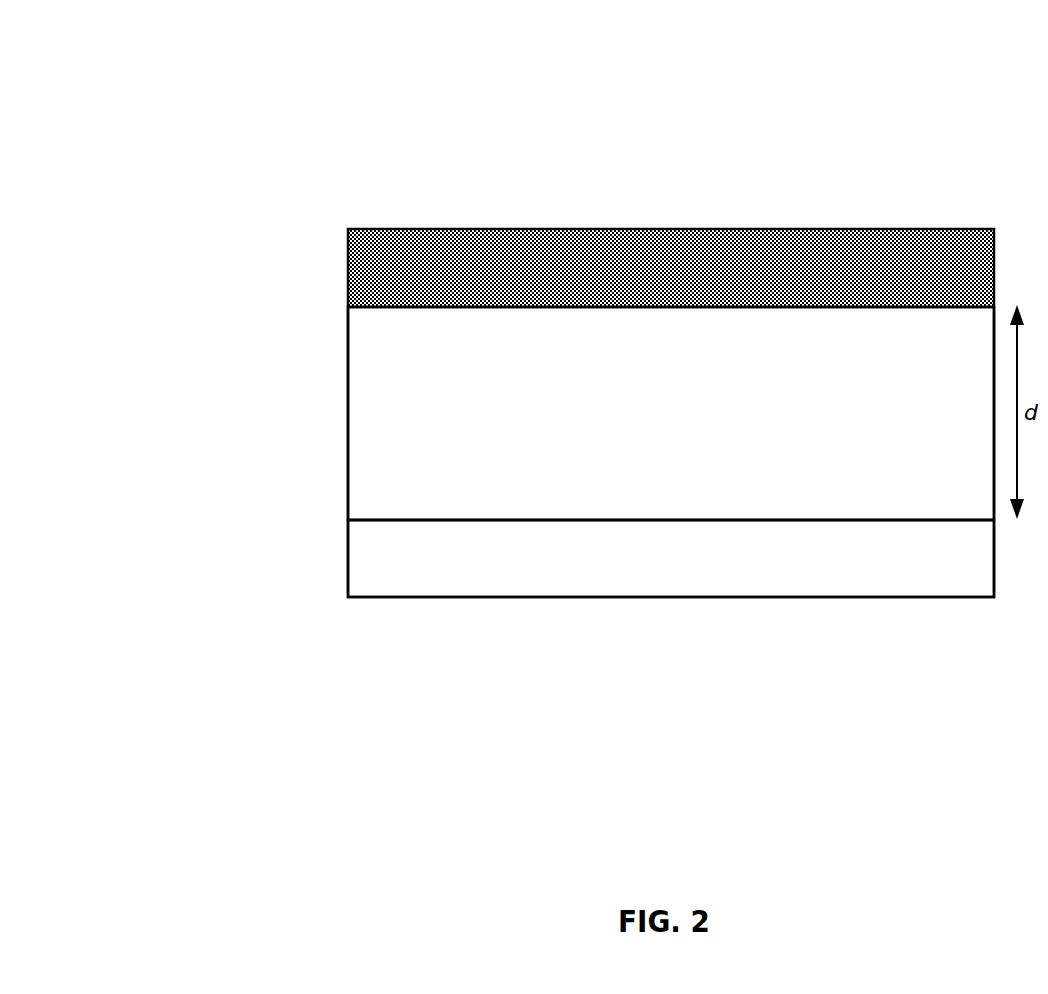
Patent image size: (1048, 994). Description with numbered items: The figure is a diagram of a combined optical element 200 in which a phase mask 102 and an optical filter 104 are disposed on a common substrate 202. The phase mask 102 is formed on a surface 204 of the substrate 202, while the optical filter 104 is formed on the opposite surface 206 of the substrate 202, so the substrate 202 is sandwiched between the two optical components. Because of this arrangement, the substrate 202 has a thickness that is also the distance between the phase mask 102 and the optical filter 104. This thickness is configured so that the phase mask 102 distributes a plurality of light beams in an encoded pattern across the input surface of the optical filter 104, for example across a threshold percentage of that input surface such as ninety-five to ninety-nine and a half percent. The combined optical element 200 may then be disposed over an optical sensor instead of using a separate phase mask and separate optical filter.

The combined optical element 200 is at (182, 43).
The phase mask 102 is at (755, 279).
The optical filter 104 is at (753, 570).
The substrate 202 is at (671, 413).
The surface 204 is at (445, 307).
The surface 206 is at (445, 519).